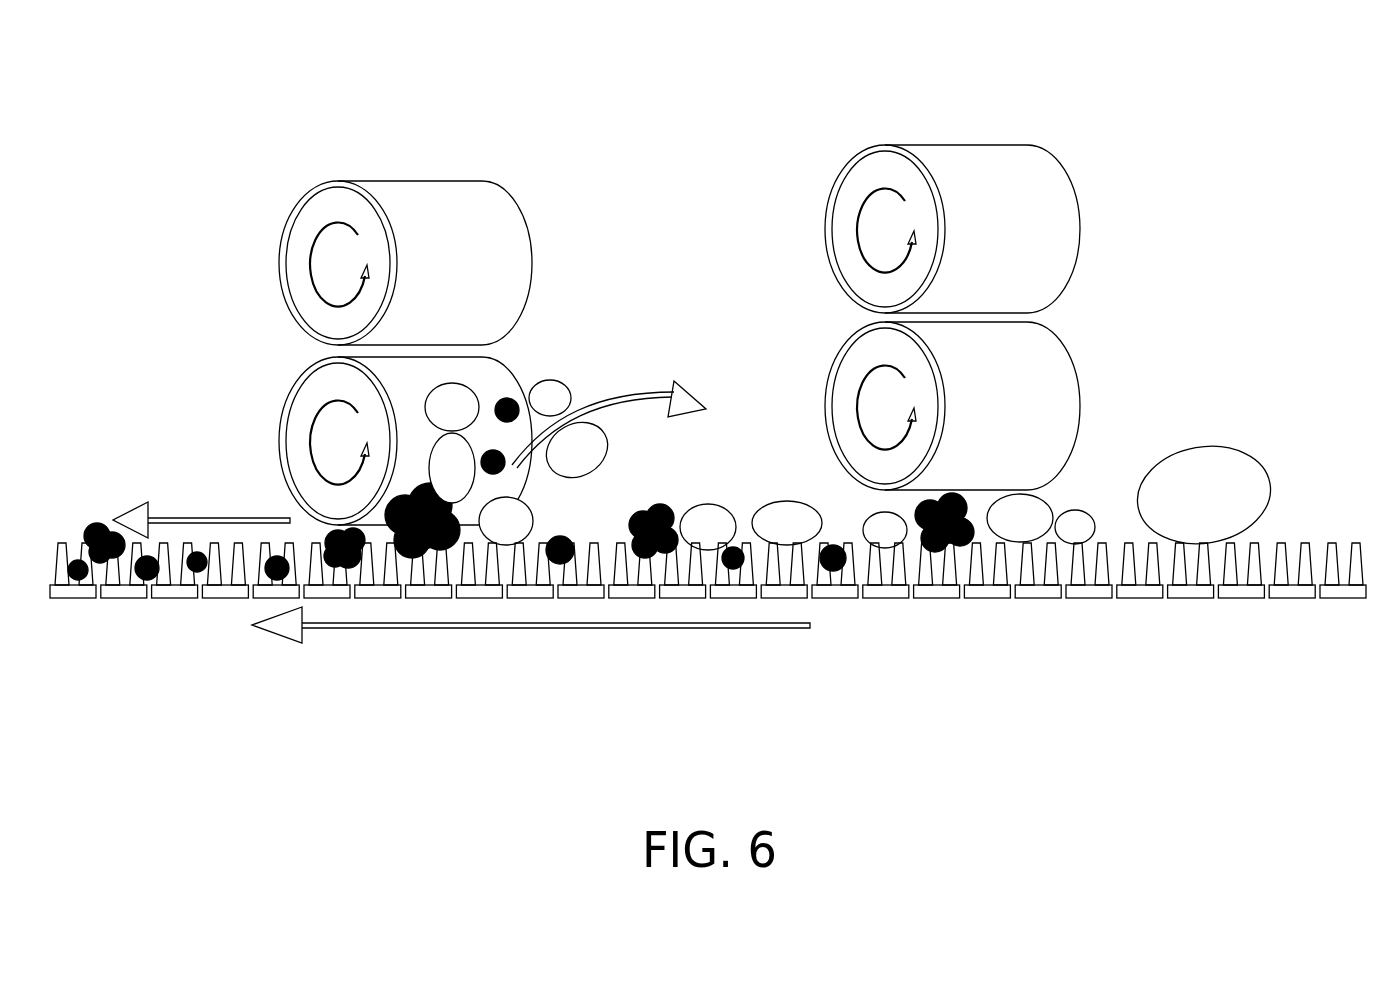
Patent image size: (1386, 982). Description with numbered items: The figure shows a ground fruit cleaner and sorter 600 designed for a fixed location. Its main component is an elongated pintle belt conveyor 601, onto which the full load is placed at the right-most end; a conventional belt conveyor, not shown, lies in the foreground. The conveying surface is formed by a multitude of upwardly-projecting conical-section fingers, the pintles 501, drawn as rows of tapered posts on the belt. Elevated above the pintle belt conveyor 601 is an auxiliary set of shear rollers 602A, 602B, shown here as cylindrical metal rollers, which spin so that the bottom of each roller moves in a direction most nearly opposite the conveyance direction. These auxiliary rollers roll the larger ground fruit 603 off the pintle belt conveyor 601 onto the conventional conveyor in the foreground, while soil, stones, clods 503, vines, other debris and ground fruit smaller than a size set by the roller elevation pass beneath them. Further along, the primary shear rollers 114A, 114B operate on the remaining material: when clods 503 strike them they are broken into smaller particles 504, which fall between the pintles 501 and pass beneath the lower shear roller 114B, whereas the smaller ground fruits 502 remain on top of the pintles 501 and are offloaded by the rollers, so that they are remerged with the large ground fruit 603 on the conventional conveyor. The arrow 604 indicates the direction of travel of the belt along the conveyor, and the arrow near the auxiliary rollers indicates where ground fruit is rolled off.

The ground fruit cleaner and sorter 600 is at (199, 100).
The spinning shear roller 114A is at (292, 225).
The lower shear roller 114B is at (290, 410).
The auxiliary shear roller 602A is at (838, 190).
The auxiliary shear roller 602B is at (835, 372).
The pintles 501 is at (1333, 563).
The smaller ground fruits 502 is at (555, 388).
The clods 503 is at (660, 508).
The smaller particles 504 is at (507, 400).
The elongated pintle belt conveyor 601 is at (943, 610).
The larger ground fruit 603 is at (1208, 478).
The direction arrow 604 is at (545, 628).